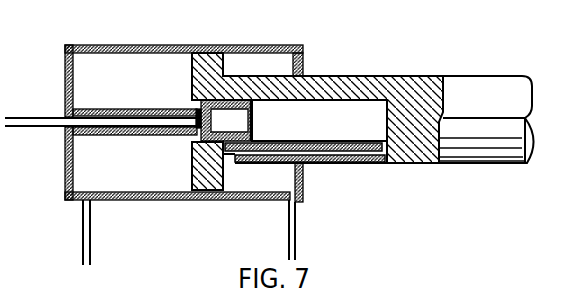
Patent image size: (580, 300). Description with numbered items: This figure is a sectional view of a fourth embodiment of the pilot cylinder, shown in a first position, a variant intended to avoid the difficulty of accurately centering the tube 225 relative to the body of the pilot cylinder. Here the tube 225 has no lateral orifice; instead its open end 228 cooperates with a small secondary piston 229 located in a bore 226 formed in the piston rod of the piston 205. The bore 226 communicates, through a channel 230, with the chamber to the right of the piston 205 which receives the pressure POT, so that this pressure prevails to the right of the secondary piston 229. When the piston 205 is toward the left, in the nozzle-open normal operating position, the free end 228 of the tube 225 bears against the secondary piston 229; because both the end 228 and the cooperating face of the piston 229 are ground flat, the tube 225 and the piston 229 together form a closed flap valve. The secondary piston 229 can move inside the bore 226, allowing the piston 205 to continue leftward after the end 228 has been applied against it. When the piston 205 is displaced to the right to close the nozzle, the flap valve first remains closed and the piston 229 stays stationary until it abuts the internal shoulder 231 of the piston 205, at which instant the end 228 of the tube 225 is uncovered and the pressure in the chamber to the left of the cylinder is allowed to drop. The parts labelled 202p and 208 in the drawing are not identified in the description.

The housing 202p is at (135, 45).
The piston 205 is at (212, 72).
The bore 226 is at (332, 100).
The tube 225 is at (102, 109).
The open end of the tube 228 is at (194, 136).
The push rod 208 is at (30, 117).
The internal shoulder 231 is at (200, 104).
The secondary piston 229 is at (242, 163).
The channel 230 is at (353, 163).